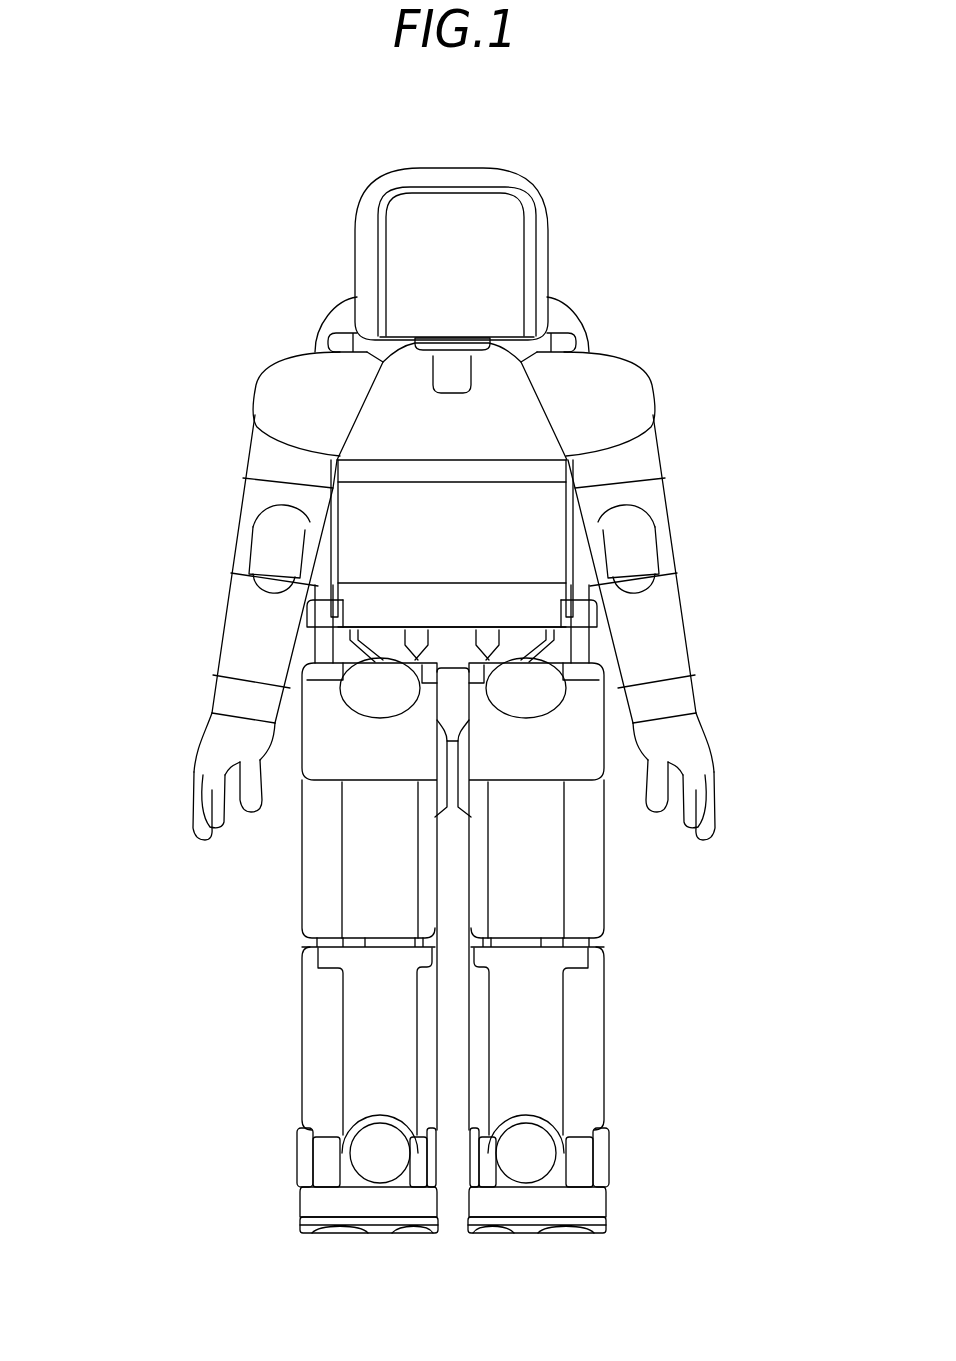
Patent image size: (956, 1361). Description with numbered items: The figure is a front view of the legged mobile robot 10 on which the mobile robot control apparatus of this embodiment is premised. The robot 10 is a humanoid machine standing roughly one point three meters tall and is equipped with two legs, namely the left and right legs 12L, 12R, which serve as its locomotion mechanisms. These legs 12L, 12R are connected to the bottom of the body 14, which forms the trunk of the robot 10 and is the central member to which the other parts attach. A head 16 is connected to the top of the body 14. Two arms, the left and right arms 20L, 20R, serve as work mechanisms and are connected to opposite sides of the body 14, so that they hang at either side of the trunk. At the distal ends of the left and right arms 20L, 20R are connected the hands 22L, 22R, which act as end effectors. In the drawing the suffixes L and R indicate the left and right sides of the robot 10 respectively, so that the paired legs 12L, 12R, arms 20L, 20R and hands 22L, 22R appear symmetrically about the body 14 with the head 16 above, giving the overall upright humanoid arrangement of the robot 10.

The legged mobile robot 10 is at (604, 298).
The right leg 12R is at (258, 963).
The left leg 12L is at (638, 958).
The body 14 is at (540, 565).
The head 16 is at (498, 187).
The right arm 20R is at (222, 460).
The left arm 20L is at (686, 447).
The right hand 22R is at (222, 750).
The left hand 22L is at (690, 745).